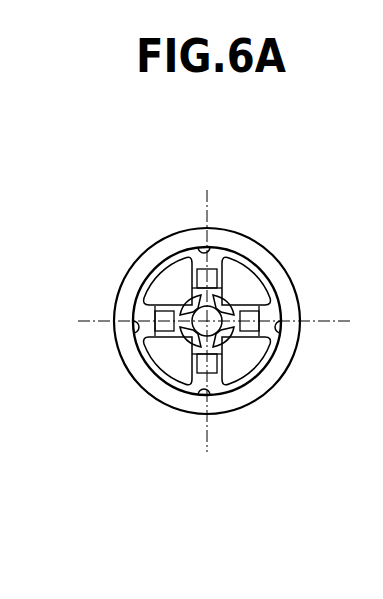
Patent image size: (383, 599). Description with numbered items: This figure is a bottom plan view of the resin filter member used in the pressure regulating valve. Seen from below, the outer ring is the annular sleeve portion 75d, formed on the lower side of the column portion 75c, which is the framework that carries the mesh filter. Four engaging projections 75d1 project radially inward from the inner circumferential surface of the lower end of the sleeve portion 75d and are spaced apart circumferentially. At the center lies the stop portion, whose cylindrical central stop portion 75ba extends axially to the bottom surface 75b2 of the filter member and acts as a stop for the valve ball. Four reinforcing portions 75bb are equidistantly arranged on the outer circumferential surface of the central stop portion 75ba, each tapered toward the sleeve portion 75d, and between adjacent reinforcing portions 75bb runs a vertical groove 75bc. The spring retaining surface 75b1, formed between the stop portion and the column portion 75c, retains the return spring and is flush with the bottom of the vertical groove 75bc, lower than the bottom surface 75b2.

The sleeve portion 75d is at (114, 298).
The engaging projection 75d1 is at (183, 275).
The spring retaining surface 75b1 is at (168, 300).
The central stop portion 75ba is at (233, 262).
The bottom surface 75b2 is at (243, 262).
The reinforcing portion 75bb is at (165, 380).
The vertical groove 75bc is at (248, 340).
The column portion 75c is at (200, 394).